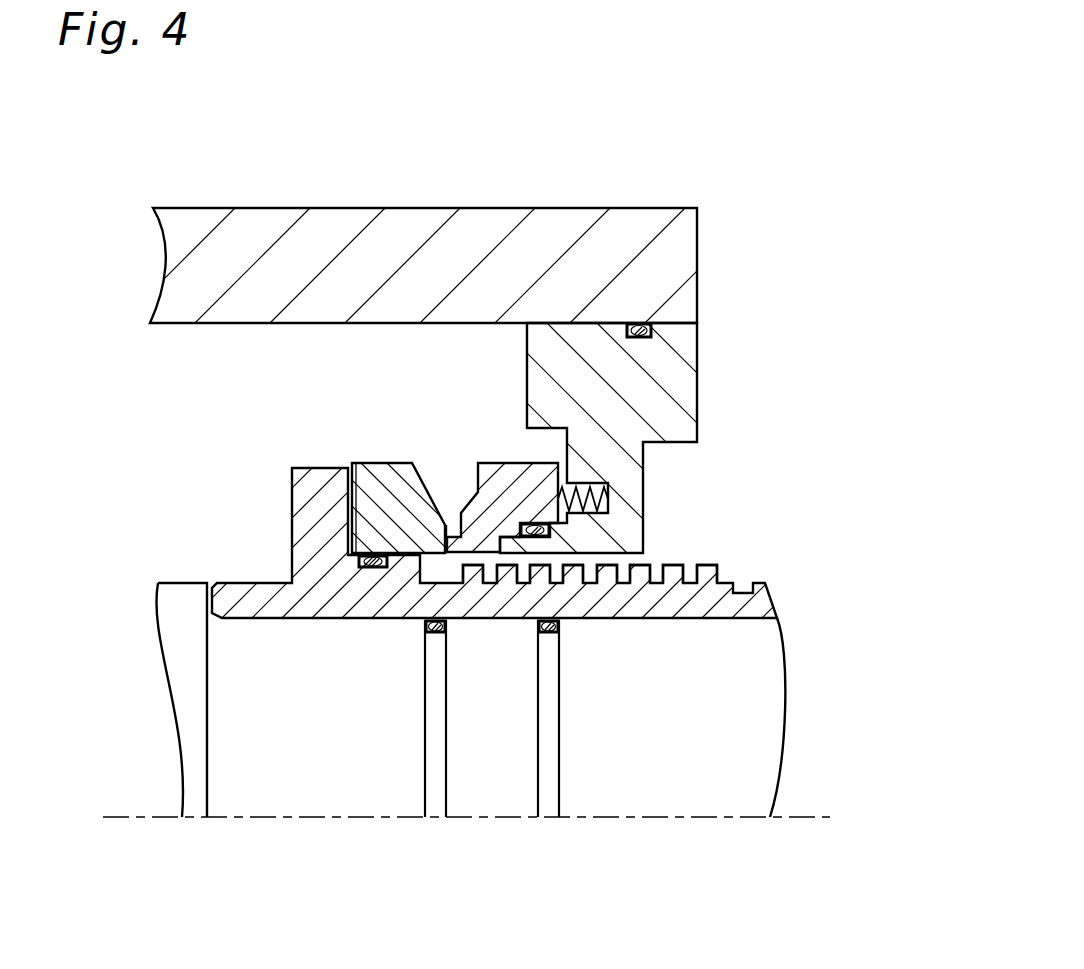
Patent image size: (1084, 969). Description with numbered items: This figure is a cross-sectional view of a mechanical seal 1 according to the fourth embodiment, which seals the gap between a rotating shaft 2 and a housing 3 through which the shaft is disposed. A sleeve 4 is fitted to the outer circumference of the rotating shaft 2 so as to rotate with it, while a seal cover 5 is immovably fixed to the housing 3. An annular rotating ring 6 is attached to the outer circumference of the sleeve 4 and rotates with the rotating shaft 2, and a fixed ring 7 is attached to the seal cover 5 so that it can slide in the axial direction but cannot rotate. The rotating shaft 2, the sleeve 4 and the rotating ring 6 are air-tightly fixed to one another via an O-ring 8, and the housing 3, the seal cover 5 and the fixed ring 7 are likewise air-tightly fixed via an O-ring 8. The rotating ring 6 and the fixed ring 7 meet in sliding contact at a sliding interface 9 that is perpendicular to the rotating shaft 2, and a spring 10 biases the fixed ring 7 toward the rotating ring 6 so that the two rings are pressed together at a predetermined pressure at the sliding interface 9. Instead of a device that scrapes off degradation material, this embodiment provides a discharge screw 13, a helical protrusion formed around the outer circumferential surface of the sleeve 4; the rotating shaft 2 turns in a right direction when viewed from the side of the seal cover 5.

The mechanical seal 1 is at (863, 393).
The rotating shaft 2 is at (778, 727).
The housing 3 is at (318, 210).
The sleeve 4 is at (791, 609).
The seal cover 5 is at (697, 387).
The rotating ring 6 is at (367, 449).
The fixed ring 7 is at (513, 449).
The O-ring 8 is at (637, 322).
The sliding interface 9 is at (446, 523).
The spring 10 is at (610, 513).
The discharge screw 13 is at (678, 563).